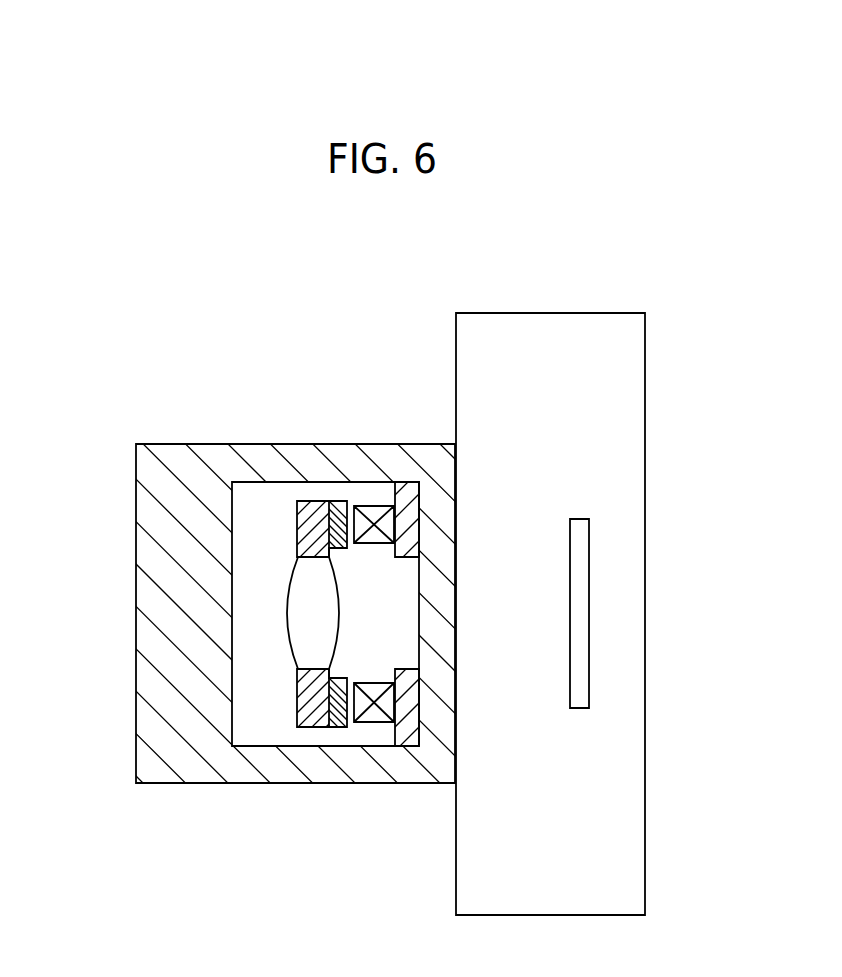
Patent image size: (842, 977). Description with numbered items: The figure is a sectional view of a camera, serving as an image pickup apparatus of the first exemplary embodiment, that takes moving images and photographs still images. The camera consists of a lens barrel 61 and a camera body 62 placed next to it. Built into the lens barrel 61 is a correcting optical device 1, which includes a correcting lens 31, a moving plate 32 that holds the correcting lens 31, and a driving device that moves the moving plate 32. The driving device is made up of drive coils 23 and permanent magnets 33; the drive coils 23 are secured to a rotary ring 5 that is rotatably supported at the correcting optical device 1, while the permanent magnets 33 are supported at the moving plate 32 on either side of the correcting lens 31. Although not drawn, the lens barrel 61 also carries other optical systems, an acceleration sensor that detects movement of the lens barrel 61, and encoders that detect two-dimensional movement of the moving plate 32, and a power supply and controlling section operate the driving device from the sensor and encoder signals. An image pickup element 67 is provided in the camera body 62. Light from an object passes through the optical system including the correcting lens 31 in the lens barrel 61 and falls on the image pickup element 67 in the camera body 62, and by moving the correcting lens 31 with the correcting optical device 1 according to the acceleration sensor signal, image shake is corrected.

The correcting optical device 1 is at (237, 611).
The rotary ring 5 is at (402, 497).
The drive coils 23 is at (370, 513).
The correcting lens 31 is at (298, 592).
The moving plate 32 is at (305, 700).
The permanent magnets 33 is at (338, 508).
The lens barrel 61 is at (318, 770).
The camera body 62 is at (633, 353).
The image pickup element 67 is at (583, 537).